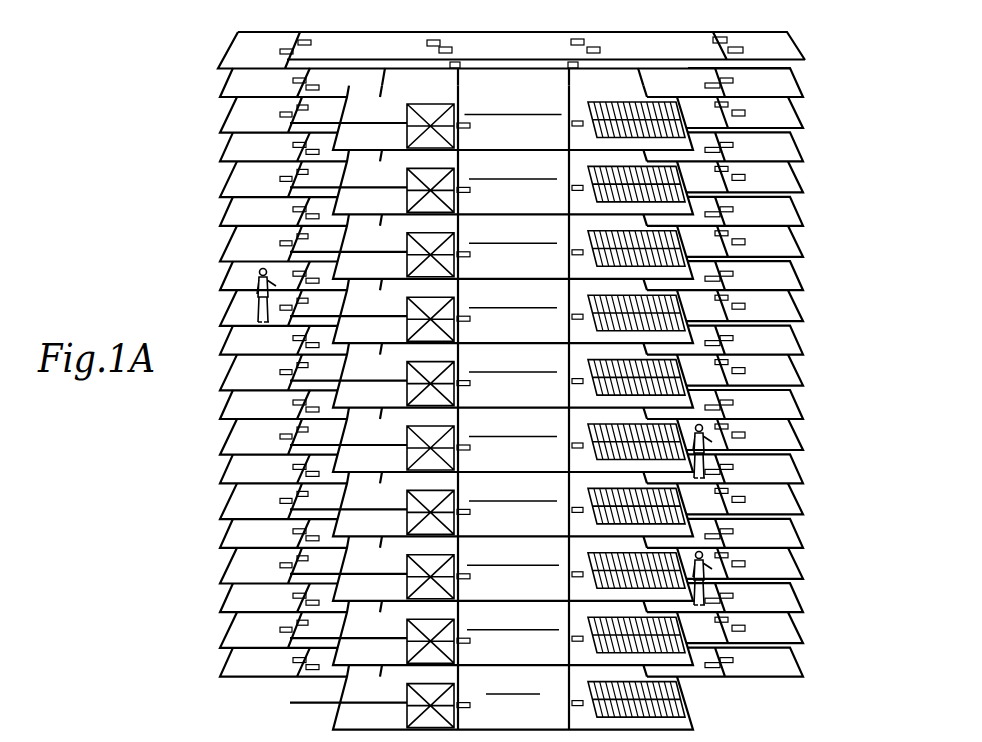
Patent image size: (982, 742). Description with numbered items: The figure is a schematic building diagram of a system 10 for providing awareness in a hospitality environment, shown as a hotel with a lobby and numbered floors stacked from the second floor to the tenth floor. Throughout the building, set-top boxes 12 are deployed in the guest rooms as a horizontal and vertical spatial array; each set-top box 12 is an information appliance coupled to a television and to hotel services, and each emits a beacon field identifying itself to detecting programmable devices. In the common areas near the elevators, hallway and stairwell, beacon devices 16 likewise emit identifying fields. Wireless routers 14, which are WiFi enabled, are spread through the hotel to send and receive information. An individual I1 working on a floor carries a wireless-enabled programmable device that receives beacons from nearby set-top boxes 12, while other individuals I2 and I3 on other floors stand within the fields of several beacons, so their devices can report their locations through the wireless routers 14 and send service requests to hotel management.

The system for providing awareness 10 is at (129, 92).
The set-top box 12 is at (571, 45).
The wireless router 14 is at (568, 65).
The beacon device 16 is at (520, 423).
The individual I1 is at (257, 299).
The individual I2 is at (708, 450).
The individual I3 is at (708, 580).